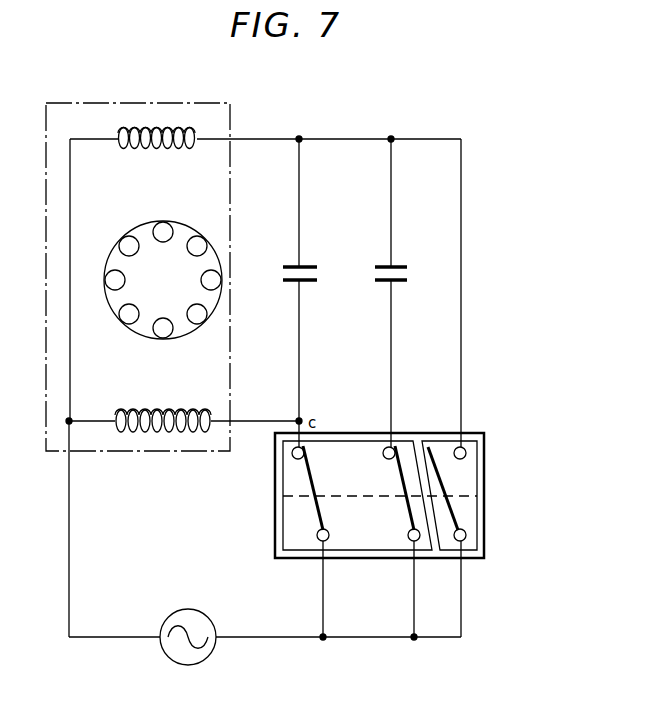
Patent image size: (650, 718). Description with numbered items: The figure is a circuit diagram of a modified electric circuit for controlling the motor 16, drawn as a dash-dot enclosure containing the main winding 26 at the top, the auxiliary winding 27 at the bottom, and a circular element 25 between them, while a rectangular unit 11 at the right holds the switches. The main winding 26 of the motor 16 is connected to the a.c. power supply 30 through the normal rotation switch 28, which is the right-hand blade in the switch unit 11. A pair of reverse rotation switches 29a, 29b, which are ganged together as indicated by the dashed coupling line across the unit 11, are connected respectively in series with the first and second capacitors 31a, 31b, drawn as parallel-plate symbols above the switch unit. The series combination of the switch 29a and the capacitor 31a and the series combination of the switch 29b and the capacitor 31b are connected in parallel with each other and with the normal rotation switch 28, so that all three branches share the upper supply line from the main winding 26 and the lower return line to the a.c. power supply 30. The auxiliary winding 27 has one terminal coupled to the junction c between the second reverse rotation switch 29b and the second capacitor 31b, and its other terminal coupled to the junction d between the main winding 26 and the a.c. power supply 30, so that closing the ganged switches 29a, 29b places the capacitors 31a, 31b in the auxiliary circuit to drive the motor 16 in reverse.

The motor 16 is at (63, 103).
The main winding 26 is at (162, 126).
The auxiliary winding 27 is at (159, 410).
The rotor 25 is at (114, 313).
The second capacitor 31b is at (317, 276).
The first capacitor 31a is at (406, 276).
The switch unit 11 is at (481, 433).
The normal rotation switch 28 is at (444, 484).
The first reverse rotation switch 29a is at (405, 518).
The second reverse rotation switch 29b is at (312, 494).
The a.c. power supply 30 is at (206, 614).